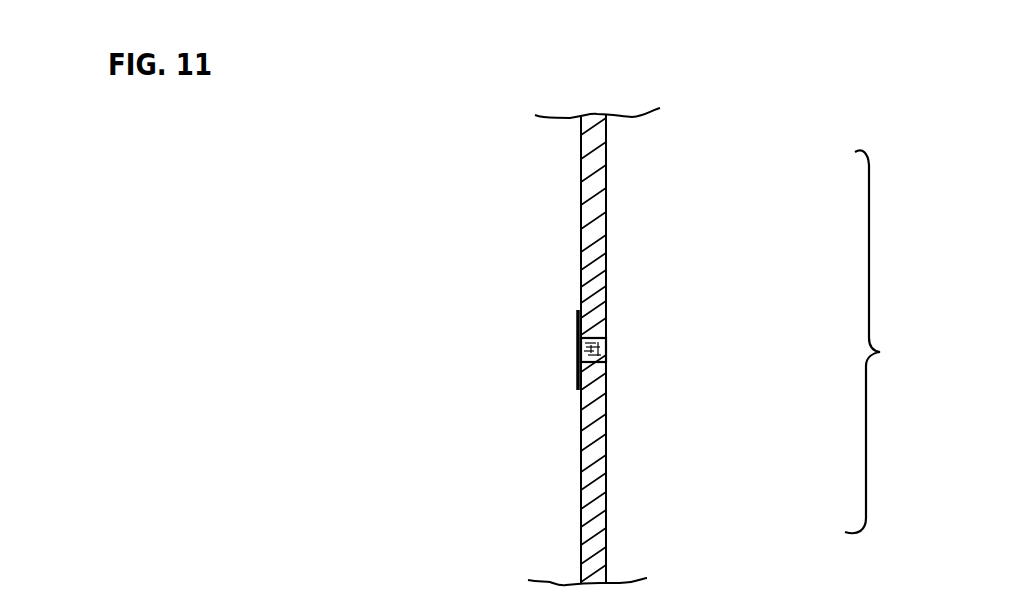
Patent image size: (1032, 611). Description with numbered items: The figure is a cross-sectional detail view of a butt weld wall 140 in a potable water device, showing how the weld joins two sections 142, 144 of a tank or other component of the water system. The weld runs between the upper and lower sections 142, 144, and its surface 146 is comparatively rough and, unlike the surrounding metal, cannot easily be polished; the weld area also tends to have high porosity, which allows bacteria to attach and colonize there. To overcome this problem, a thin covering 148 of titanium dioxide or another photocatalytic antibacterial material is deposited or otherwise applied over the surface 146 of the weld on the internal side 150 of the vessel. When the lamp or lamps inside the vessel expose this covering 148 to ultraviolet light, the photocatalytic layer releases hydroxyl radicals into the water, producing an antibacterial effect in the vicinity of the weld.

The butt weld wall 140 is at (892, 342).
The section 142 is at (615, 215).
The section 144 is at (613, 463).
The surface of the weld 146 is at (610, 350).
The thin covering 148 is at (573, 363).
The internal side 150 is at (360, 252).